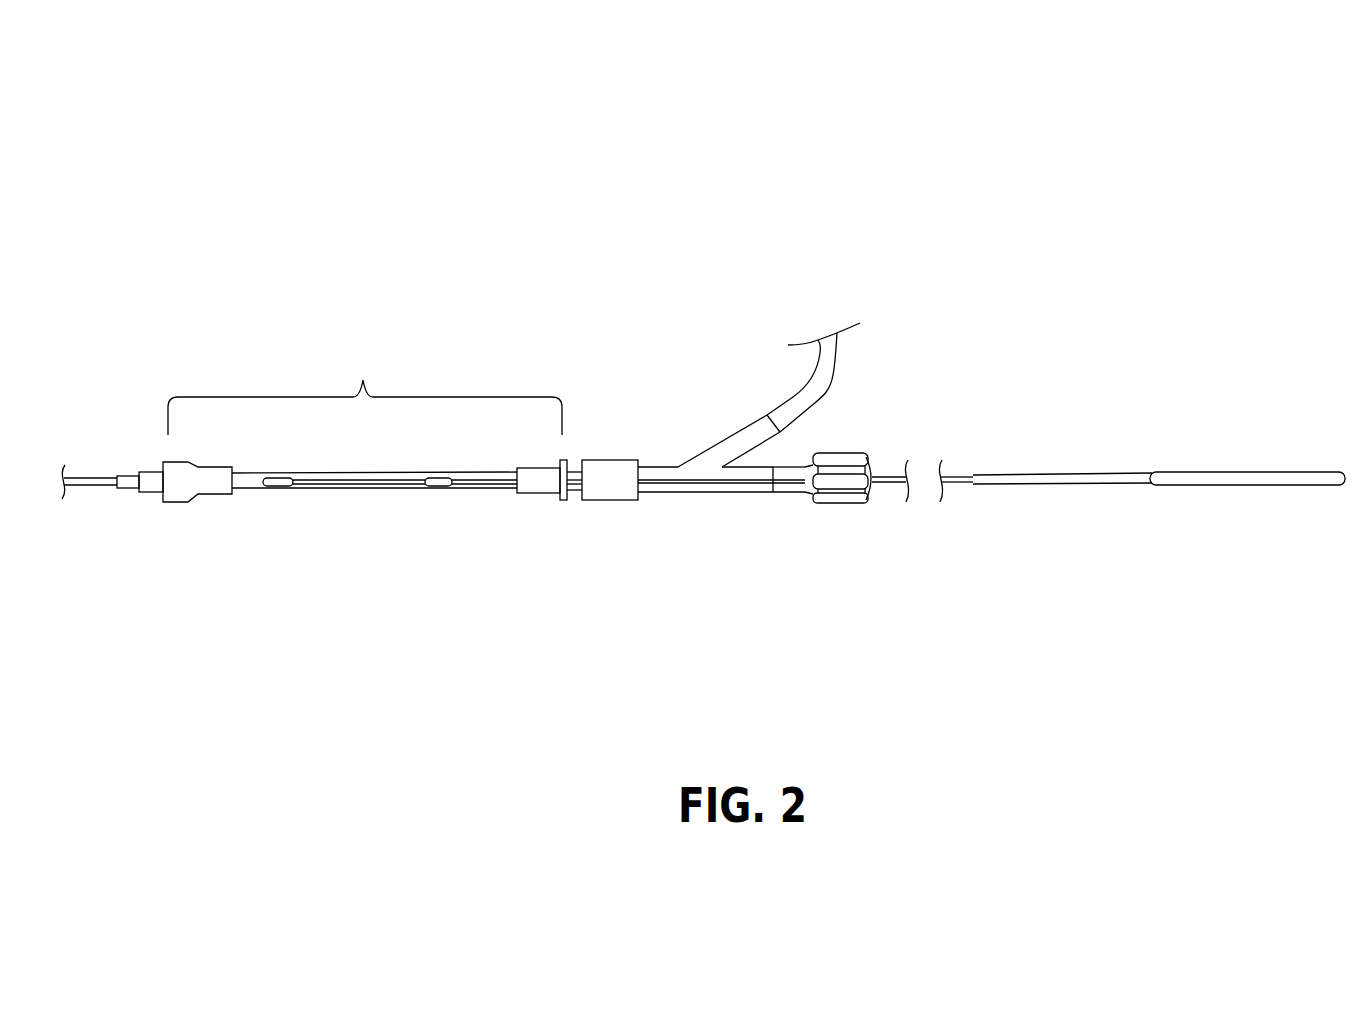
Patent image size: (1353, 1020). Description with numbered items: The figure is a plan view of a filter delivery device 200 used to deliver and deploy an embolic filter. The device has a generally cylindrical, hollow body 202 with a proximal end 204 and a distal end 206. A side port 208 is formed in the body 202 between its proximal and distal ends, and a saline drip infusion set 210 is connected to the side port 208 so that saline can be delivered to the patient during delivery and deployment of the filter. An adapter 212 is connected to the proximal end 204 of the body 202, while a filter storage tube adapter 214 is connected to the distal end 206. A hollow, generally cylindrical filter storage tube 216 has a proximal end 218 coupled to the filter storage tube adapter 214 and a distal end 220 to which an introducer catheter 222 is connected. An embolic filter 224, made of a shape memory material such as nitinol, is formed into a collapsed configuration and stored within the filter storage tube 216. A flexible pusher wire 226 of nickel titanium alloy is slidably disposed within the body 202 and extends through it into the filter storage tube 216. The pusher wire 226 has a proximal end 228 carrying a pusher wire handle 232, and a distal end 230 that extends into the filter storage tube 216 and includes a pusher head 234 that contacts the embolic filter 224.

The filter delivery device 200 is at (860, 160).
The body 202 is at (737, 486).
The proximal end 204 is at (781, 486).
The distal end 206 is at (655, 486).
The side port 208 is at (708, 457).
The saline drip infusion set 210 is at (835, 368).
The adapter 212 is at (847, 453).
The filter storage tube adapter 214 is at (603, 470).
The filter storage tube 216 is at (345, 477).
The proximal end 218 is at (532, 488).
The distal end 220 is at (205, 486).
The introducer catheter 222 is at (155, 486).
The embolic filter 224 is at (317, 487).
The pusher wire 226 is at (700, 486).
The proximal end 228 is at (950, 480).
The distal end 230 is at (464, 487).
The pusher wire handle 232 is at (1137, 480).
The pusher head 234 is at (437, 487).